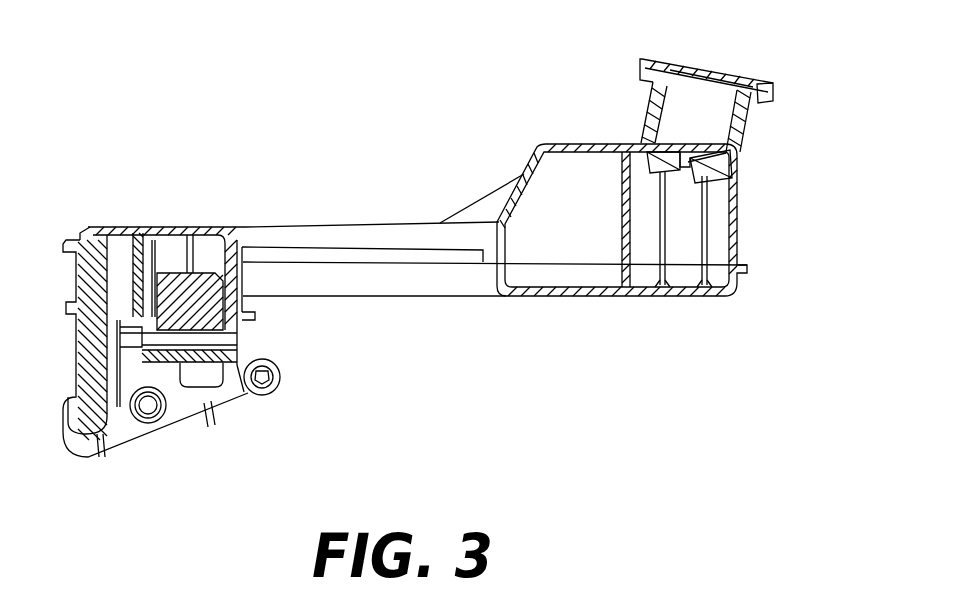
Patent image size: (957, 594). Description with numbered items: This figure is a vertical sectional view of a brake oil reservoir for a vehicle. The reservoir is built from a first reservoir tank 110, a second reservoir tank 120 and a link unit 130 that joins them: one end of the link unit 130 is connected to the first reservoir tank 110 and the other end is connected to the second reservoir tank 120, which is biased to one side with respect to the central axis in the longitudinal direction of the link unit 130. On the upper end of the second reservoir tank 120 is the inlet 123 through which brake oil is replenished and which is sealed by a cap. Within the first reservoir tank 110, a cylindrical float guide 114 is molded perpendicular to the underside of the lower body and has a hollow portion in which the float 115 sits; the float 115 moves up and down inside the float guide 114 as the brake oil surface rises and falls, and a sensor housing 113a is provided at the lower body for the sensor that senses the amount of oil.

The first reservoir tank 110 is at (100, 227).
The sensor housing 113a is at (243, 340).
The float guide 114 is at (231, 238).
The float 115 is at (256, 322).
The second reservoir tank 120 is at (573, 142).
The inlet 123 is at (721, 72).
The link unit 130 is at (354, 227).